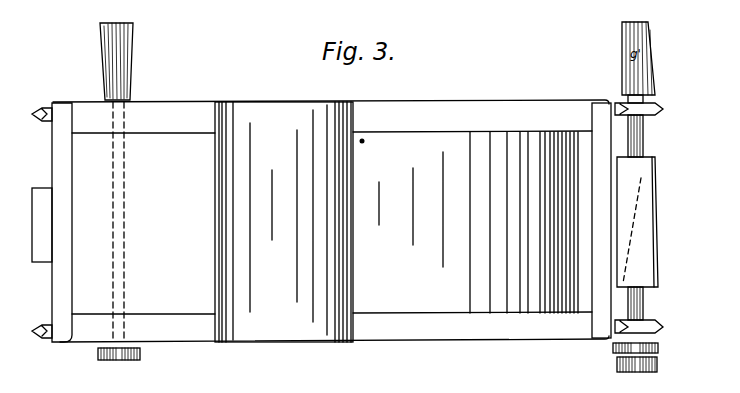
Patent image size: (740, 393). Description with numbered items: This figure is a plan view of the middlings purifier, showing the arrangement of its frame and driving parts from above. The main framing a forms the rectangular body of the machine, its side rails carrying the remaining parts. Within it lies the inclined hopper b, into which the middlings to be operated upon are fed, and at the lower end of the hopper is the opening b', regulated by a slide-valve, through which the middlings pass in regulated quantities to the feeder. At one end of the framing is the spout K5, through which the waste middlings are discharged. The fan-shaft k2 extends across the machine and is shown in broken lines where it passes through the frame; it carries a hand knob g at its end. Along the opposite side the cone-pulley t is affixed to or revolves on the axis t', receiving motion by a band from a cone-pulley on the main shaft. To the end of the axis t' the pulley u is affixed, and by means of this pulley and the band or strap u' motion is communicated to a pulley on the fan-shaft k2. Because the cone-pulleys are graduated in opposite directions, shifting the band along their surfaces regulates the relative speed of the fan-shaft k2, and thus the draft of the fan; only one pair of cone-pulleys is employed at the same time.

The main framing a is at (332, 218).
The inclined hopper b is at (453, 222).
The opening at lower end of hopper b' is at (566, 222).
The hand knob g is at (116, 61).
The fan-shaft k2 is at (118, 222).
The spout K5 is at (42, 225).
The cone-pulley t is at (637, 222).
The axis t' is at (641, 217).
The pulley u is at (378, 355).
The band or strap u' is at (284, 230).